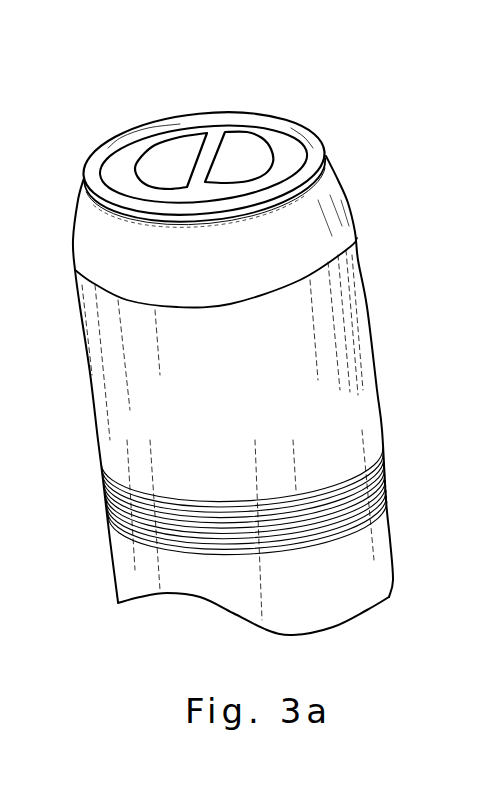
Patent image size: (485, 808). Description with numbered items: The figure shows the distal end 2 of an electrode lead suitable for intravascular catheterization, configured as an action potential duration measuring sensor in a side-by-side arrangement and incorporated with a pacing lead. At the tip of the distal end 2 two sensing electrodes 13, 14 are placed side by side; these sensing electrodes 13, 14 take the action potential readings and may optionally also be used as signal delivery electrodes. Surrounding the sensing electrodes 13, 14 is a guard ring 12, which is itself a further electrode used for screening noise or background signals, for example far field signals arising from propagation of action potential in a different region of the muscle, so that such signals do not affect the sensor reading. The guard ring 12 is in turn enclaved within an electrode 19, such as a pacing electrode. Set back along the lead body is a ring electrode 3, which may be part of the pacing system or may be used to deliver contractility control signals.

The distal end 2 is at (320, 387).
The ring electrode 3 is at (103, 493).
The guard ring 12 is at (133, 136).
The sensing electrode 13 is at (182, 143).
The sensing electrode 14 is at (243, 142).
The electrode 19 is at (306, 214).